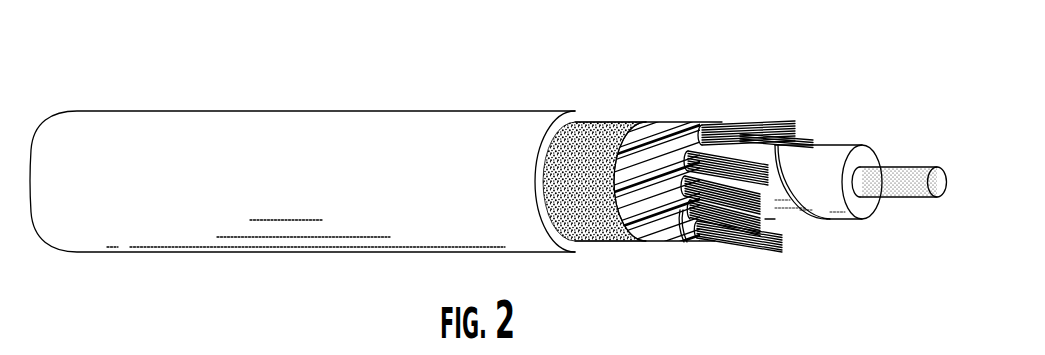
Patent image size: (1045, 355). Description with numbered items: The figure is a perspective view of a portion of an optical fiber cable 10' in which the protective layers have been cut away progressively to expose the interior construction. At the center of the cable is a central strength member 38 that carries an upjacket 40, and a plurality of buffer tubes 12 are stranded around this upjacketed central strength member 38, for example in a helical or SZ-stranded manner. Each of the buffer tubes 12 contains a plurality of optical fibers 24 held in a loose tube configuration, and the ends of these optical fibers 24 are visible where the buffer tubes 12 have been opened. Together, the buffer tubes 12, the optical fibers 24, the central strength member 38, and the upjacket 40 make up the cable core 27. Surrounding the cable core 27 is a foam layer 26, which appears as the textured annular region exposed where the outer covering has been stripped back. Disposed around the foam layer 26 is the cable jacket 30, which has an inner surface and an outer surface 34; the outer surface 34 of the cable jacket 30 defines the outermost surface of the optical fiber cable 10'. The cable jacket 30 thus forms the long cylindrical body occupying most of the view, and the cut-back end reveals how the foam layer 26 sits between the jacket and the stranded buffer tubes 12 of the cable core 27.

The optical fiber cable 10' is at (488, 143).
The cable jacket 30 is at (370, 135).
The outer surface 34 is at (272, 193).
The foam layer 26 is at (618, 123).
The buffer tubes 12 is at (672, 148).
The optical fibers 24 is at (805, 142).
The cable core 27 is at (737, 100).
The upjacket 40 is at (830, 163).
The central strength member 38 is at (900, 167).